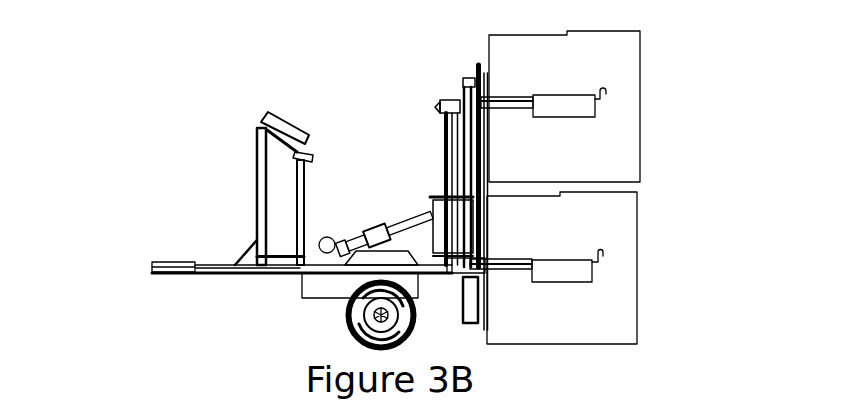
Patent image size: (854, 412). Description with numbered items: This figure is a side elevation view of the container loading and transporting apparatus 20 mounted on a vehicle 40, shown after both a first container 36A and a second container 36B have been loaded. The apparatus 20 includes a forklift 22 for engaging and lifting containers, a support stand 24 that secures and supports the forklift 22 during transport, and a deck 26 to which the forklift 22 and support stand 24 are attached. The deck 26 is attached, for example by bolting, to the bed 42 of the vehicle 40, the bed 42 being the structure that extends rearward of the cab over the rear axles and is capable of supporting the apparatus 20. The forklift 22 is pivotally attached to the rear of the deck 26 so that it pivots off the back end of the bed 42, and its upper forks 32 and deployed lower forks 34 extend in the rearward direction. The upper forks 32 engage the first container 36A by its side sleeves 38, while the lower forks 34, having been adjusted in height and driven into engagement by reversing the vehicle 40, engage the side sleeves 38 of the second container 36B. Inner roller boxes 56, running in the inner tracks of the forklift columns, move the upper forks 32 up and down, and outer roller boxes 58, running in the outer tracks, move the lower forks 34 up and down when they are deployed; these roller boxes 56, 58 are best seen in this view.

The apparatus 20 is at (126, 175).
The forklift 22 is at (425, 142).
The support stand 24 is at (237, 178).
The deck 26 is at (208, 263).
The upper forks 32 is at (606, 97).
The lower forks 34 is at (603, 262).
The first container 36A is at (640, 60).
The second container 36B is at (637, 223).
The side sleeves 38 is at (572, 282).
The vehicle 40 is at (283, 293).
The bed 42 is at (228, 275).
The inner roller boxes 56 is at (460, 82).
The outer roller boxes 58 is at (417, 222).